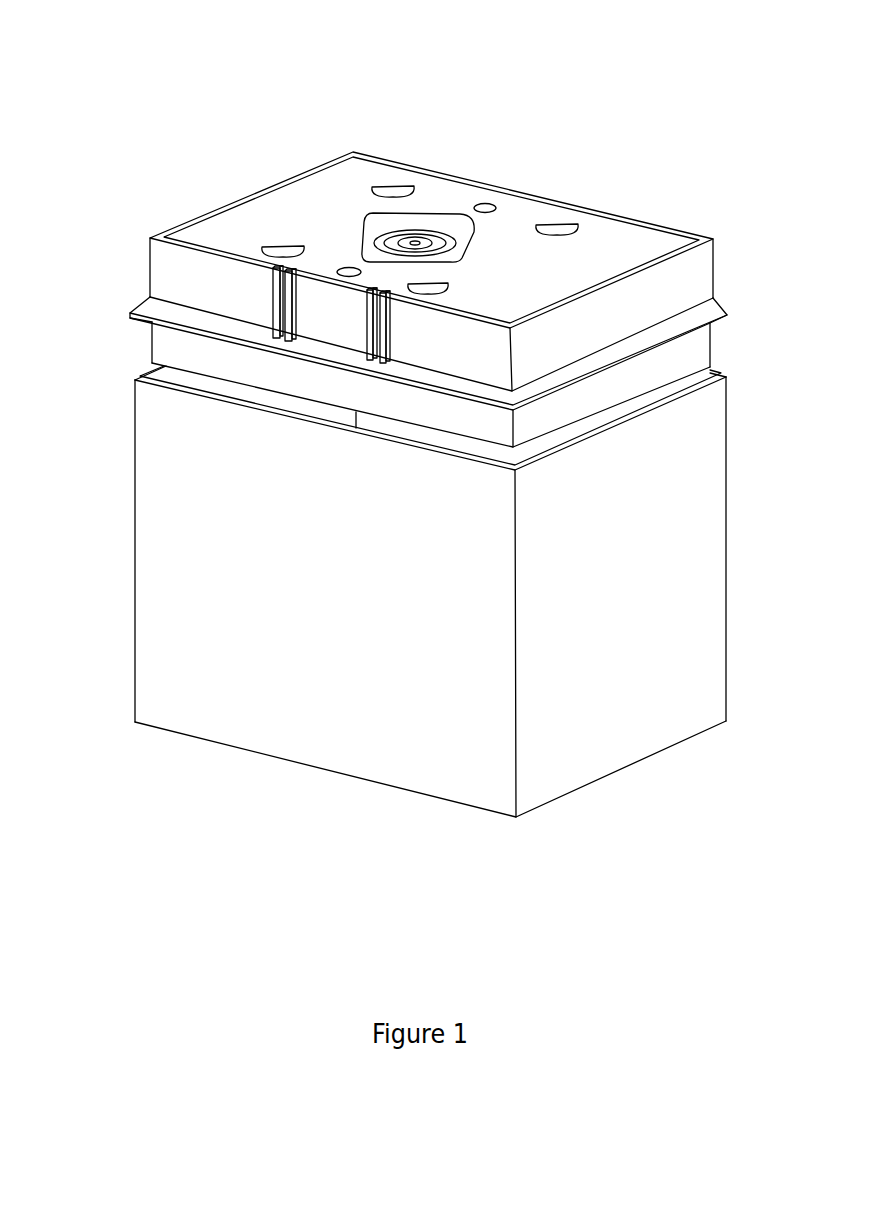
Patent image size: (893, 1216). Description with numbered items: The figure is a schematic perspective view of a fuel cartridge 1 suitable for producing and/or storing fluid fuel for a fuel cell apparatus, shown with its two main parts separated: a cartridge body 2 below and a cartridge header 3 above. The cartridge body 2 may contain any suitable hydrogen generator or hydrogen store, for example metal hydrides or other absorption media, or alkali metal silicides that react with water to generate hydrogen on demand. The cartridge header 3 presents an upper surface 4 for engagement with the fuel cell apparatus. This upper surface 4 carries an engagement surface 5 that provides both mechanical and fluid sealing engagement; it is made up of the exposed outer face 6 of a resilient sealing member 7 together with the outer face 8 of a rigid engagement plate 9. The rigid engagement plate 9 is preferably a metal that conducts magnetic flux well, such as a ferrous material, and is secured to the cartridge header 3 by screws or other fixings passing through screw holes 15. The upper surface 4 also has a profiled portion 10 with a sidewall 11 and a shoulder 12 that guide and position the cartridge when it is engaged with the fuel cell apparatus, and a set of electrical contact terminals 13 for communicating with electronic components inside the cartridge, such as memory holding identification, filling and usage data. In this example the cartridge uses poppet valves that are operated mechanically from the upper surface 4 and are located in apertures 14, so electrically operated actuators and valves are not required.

The fuel cartridge 1 is at (140, 138).
The cartridge body 2 is at (153, 607).
The cartridge header 3 is at (345, 125).
The upper surface 4 is at (743, 256).
The engagement surface 5 is at (458, 232).
The outer face of resilient sealing member 6 is at (438, 226).
The resilient sealing member 7 is at (374, 230).
The outer face of rigid engagement plate 8 is at (210, 240).
The rigid engagement plate 9 is at (288, 208).
The profiled portion 10 is at (122, 298).
The sidewall 11 is at (673, 283).
The shoulder 12 is at (677, 322).
The electrical contact terminals 13 is at (275, 287).
The apertures 14 is at (487, 203).
The screw holes 15 is at (558, 220).